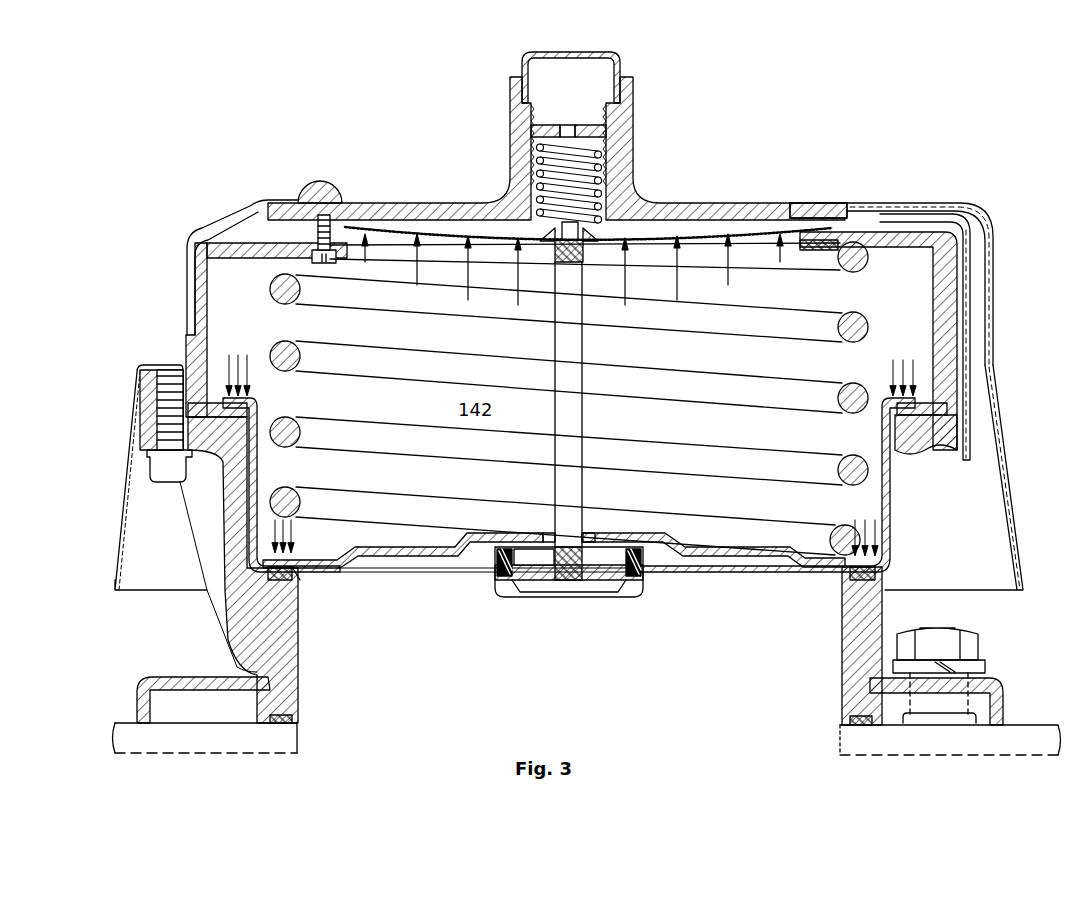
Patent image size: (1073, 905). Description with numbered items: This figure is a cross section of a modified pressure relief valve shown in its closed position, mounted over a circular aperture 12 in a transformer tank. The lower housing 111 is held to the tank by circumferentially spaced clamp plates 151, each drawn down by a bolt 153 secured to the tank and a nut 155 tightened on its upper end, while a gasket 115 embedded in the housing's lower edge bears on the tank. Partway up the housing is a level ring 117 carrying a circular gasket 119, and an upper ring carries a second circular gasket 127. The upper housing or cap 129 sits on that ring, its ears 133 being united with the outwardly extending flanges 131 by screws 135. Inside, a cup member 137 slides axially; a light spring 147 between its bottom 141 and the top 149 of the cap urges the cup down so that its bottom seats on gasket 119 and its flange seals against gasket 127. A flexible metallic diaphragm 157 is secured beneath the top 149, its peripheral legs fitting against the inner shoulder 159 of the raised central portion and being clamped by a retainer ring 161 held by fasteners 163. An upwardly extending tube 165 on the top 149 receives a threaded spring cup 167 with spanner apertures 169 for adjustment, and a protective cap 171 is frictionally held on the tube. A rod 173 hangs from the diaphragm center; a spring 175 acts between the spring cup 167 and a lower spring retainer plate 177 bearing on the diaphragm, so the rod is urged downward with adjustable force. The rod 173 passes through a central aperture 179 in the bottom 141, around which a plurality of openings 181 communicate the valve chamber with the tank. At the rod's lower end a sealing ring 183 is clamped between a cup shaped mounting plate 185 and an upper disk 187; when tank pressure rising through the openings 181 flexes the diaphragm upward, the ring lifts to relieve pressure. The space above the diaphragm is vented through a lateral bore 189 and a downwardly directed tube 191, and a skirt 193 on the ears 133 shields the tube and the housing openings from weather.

The circular aperture 12 is at (297, 740).
The lower housing 111 is at (298, 638).
The gasket 115 is at (280, 723).
The level ring 117 is at (293, 580).
The circular gasket 119 is at (300, 574).
The circular gasket 127 is at (567, 372).
The upper housing or cap 129 is at (207, 302).
The outwardly extending flanges 131 is at (140, 440).
The ears 133 is at (137, 372).
The screws 135 is at (170, 480).
The cup member 137 is at (257, 472).
The bottom 141 is at (418, 556).
The spring 147 is at (292, 302).
The top 149 is at (232, 250).
The clamp plates 151 is at (178, 676).
The bolt 153 is at (925, 698).
The nut 155 is at (970, 636).
The flexible metallic diaphragm 157 is at (628, 258).
The inner shoulder 159 is at (330, 200).
The retainer ring 161 is at (810, 252).
The fasteners 163 is at (336, 262).
The tube 165 is at (633, 120).
The spring cup 167 is at (541, 125).
The spanner apertures 169 is at (597, 125).
The cap 171 is at (521, 62).
The rod 173 is at (583, 352).
The spring 175 is at (590, 220).
The lower spring retainer plate 177 is at (600, 240).
The central aperture 179 is at (588, 535).
The openings 181 is at (616, 534).
The sealing ring 183 is at (498, 592).
The cup shaped mounting plate 185 is at (598, 596).
The upper disk 187 is at (534, 555).
The bore 189 is at (815, 212).
The tube 191 is at (985, 200).
The skirt 193 is at (1000, 385).